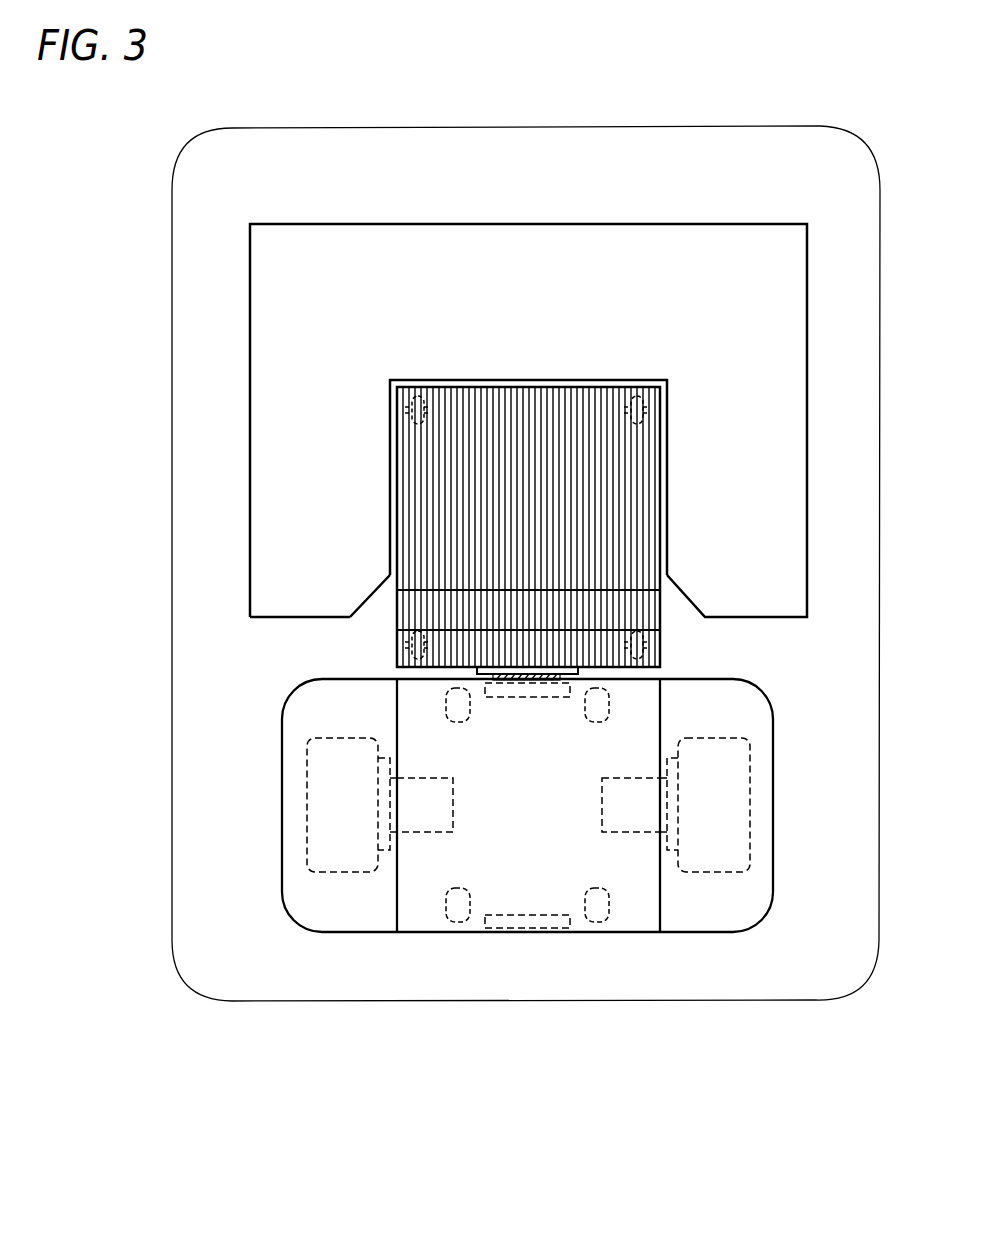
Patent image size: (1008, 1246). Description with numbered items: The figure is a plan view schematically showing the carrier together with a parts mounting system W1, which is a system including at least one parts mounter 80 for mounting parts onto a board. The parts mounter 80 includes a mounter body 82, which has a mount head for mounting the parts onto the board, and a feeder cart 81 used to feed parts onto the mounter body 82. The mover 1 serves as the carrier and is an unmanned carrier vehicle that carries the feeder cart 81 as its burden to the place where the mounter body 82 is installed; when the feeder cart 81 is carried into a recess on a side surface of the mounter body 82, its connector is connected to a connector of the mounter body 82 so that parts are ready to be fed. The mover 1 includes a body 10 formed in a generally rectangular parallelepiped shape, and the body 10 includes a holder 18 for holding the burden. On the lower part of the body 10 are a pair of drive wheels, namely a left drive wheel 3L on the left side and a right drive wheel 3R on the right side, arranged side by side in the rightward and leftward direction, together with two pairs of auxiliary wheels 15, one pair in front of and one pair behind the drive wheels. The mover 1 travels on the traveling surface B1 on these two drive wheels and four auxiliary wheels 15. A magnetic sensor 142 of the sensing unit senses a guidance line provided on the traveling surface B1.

The mover 1 is at (573, 782).
The body 10 is at (717, 688).
The auxiliary wheels 15 is at (455, 724).
The holder 18 is at (545, 681).
The magnetic sensor 142 is at (517, 698).
The right drive wheel 3R is at (327, 748).
The left drive wheel 3L is at (708, 868).
The parts mounter 80 is at (201, 592).
The feeder cart 81 is at (397, 655).
The mounter body 82 is at (258, 603).
The parts mounting system W1 is at (721, 232).
The traveling surface B1 is at (504, 990).